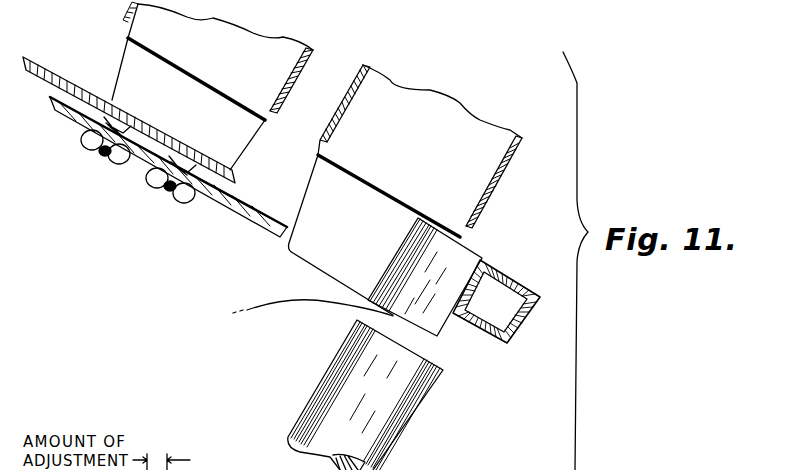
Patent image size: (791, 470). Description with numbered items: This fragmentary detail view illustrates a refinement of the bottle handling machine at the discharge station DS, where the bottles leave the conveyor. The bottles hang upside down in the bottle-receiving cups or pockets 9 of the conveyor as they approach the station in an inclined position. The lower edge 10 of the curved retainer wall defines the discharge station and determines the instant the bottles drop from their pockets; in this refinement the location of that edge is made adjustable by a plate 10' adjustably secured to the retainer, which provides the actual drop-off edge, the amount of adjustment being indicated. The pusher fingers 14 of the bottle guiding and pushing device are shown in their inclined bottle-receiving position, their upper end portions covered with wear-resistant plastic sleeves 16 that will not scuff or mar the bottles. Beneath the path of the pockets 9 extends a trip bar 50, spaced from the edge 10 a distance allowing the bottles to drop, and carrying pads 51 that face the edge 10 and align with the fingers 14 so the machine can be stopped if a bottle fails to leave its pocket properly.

The bottle-receiving cups or pockets 9 is at (273, 87).
The lower edge of the retainer wall 10 is at (151, 130).
The plate 10' is at (168, 178).
The discharge station DS is at (261, 255).
The fingers 14 is at (318, 390).
The sleeves 16 is at (390, 447).
The trip bar 50 is at (497, 262).
The pads 51 is at (476, 345).